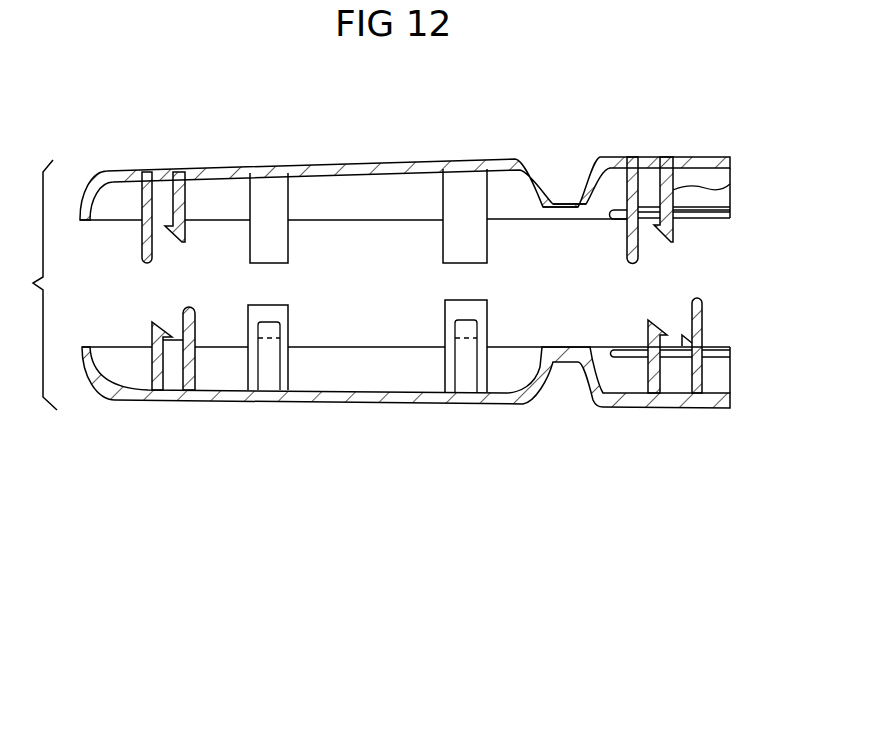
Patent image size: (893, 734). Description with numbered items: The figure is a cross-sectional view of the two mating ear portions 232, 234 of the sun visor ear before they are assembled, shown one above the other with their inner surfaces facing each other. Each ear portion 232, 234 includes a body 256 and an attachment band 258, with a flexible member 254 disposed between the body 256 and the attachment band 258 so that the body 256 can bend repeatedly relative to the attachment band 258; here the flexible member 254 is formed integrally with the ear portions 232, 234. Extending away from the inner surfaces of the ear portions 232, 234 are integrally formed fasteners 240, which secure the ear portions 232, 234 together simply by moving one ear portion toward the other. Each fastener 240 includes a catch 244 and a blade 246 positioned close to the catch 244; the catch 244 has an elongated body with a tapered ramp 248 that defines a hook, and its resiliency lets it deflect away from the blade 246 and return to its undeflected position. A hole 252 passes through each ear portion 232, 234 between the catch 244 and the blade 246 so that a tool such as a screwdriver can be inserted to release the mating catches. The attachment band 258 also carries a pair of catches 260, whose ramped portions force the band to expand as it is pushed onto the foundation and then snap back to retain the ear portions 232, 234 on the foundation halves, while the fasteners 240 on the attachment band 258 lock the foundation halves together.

The ear portion 232 is at (445, 157).
The ear portion 234 is at (406, 414).
The fastener 240 is at (238, 298).
The catch 244 is at (733, 192).
The blade 246 is at (620, 219).
The tapered ramp 248 is at (671, 319).
The hole 252 is at (167, 173).
The flexible member 254 is at (562, 160).
The body 256 is at (279, 163).
The attachment band 258 is at (712, 157).
The catch 260 is at (707, 212).